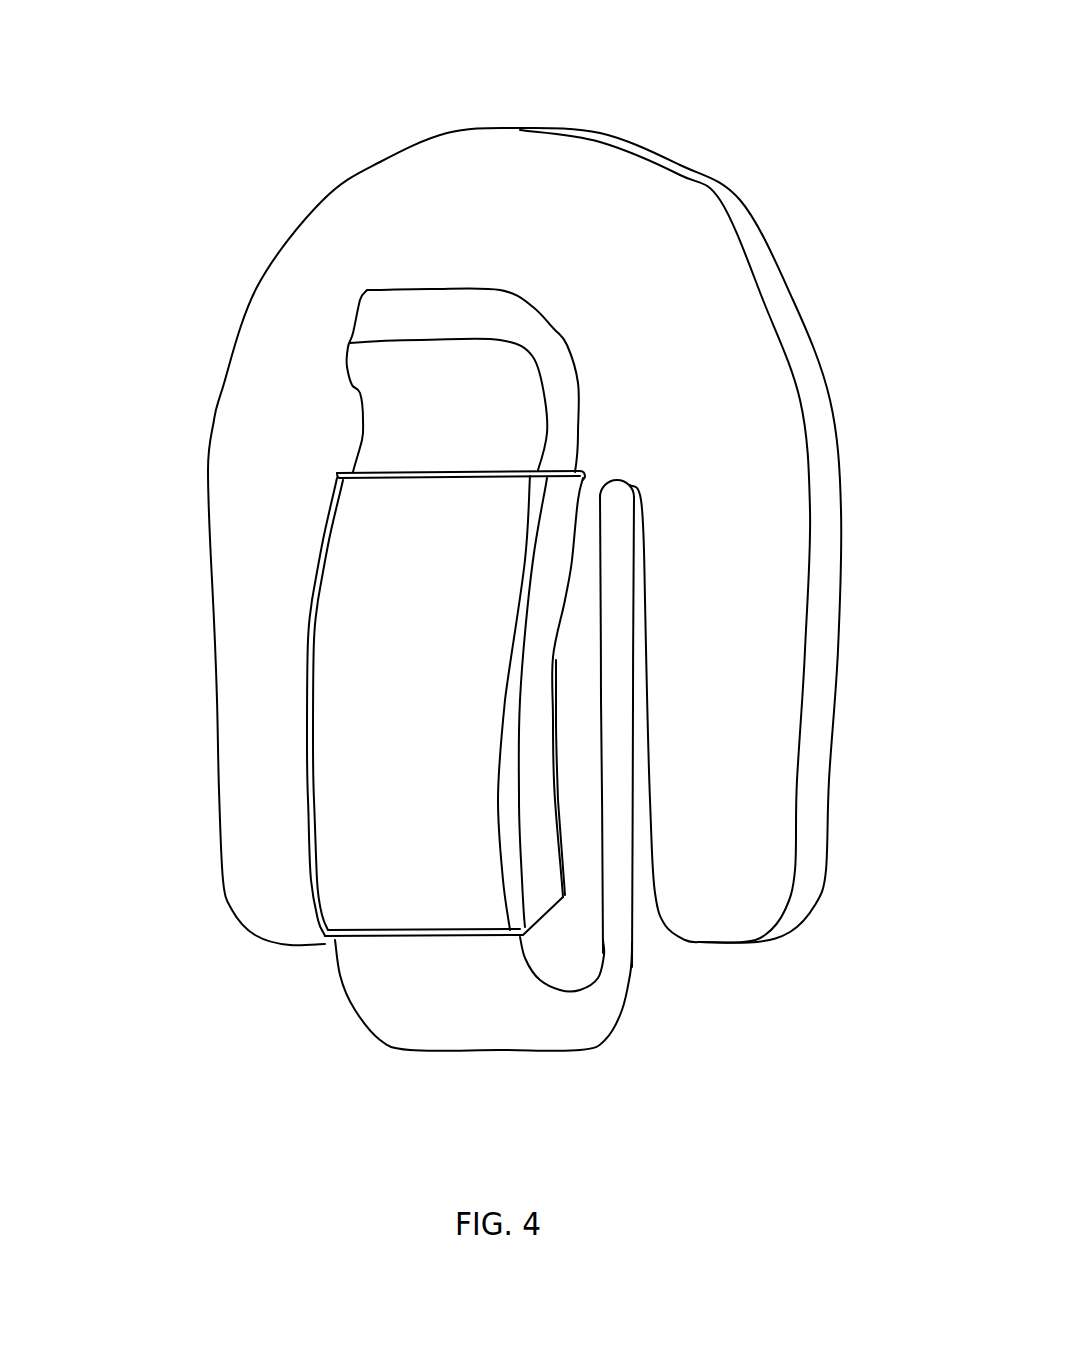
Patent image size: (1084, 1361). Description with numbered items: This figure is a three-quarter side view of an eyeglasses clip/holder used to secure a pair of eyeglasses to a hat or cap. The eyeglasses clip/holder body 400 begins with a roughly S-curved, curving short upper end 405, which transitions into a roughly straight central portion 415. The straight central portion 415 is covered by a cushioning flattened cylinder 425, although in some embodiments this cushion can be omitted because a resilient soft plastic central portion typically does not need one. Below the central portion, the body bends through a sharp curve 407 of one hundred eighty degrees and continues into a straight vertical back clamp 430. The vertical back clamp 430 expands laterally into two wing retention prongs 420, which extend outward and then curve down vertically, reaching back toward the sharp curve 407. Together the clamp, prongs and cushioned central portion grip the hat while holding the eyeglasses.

The eyeglasses clip/holder body 400 is at (267, 1072).
The curving short upper end 405 is at (412, 318).
The sharp curve 407 is at (590, 1030).
The straight central portion 415 is at (563, 735).
The wing retention prongs 420 is at (277, 462).
The cushioning flattened cylinder 425 is at (405, 680).
The vertical back clamp 430 is at (516, 128).